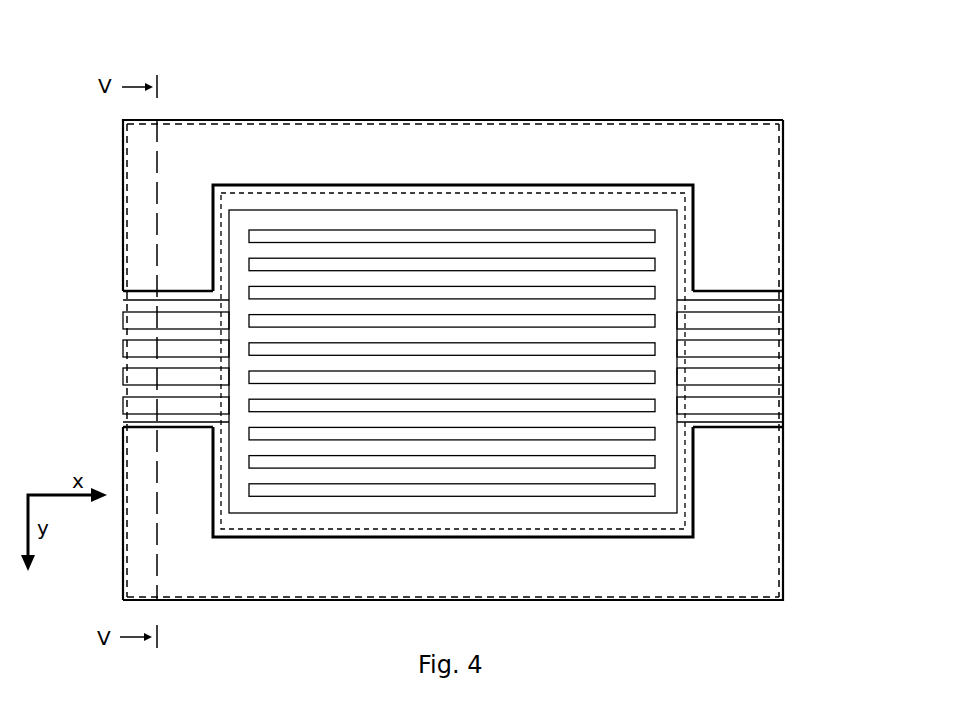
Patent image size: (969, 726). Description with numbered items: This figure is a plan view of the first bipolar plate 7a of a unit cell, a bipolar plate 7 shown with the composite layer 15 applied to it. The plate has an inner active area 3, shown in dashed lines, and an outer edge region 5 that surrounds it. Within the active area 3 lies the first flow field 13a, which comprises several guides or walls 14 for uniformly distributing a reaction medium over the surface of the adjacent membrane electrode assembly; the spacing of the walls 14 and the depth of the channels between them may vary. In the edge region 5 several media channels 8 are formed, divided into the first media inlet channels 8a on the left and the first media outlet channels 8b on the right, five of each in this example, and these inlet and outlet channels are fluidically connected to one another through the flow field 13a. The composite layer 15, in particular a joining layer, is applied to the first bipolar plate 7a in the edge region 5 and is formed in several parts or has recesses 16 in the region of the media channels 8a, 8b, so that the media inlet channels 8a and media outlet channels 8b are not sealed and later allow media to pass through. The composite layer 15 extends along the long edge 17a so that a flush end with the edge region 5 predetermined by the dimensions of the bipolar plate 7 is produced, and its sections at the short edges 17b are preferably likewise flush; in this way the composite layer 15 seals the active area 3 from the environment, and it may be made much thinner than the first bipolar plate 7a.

The active area 3 is at (400, 190).
The edge region 5 is at (245, 120).
The bipolar plate 7 is at (481, 394).
The first bipolar plate 7a is at (767, 577).
The media channels 8 is at (460, 359).
The first media inlet channels 8a is at (148, 415).
The first media outlet channels 8b is at (760, 414).
The first flow field 13a is at (552, 382).
The walls 14 is at (276, 456).
The composite layer 15 is at (318, 155).
The recesses 16 is at (166, 336).
The long edge 17a is at (580, 119).
The short edges 17b is at (124, 205).